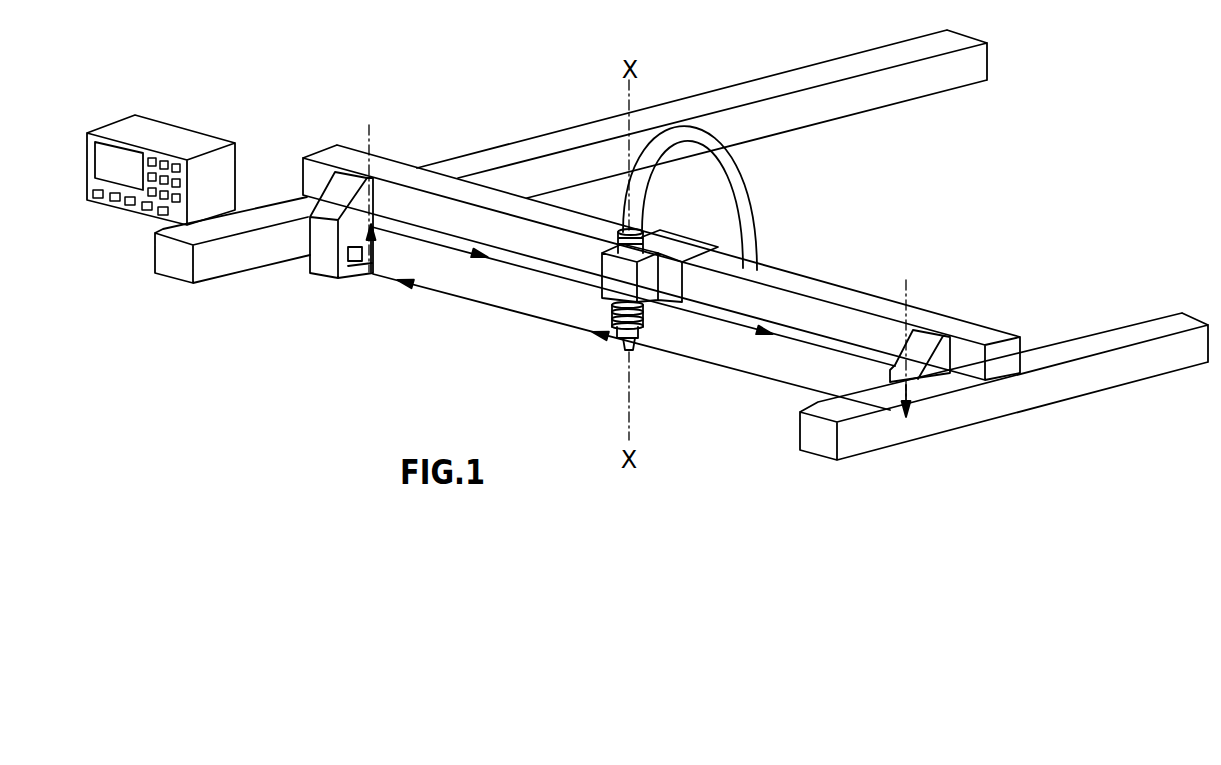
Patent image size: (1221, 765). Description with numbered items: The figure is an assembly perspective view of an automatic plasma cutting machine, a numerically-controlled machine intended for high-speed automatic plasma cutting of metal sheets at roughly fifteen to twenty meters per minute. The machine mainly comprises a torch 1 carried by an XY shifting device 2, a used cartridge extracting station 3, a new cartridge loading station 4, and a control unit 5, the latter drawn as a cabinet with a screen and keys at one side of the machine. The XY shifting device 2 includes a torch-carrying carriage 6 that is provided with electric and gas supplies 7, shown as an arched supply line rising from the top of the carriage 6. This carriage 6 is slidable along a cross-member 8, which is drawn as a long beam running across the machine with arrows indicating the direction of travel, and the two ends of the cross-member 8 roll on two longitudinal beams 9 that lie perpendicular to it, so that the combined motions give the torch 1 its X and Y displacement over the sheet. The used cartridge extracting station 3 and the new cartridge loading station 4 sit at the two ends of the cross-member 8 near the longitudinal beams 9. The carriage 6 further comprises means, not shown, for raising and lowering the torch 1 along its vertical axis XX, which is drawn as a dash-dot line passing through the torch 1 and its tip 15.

The torch 1 is at (606, 351).
The XY shifting device 2 is at (515, 122).
The used cartridge extracting station 3 is at (322, 263).
The new cartridge loading station 4 is at (937, 363).
The control unit 5 is at (188, 142).
The torch-carrying carriage 6 is at (677, 238).
The electric and gas supplies 7 is at (747, 200).
The cross-member 8 is at (823, 293).
The longitudinal beams 9 is at (827, 73).
The tool tip 15 is at (655, 352).